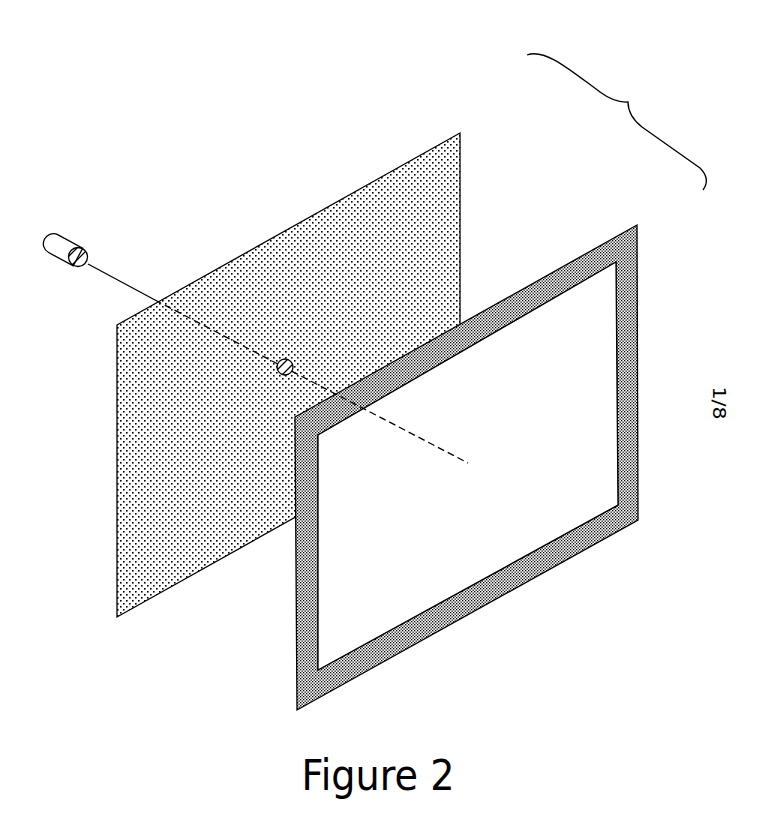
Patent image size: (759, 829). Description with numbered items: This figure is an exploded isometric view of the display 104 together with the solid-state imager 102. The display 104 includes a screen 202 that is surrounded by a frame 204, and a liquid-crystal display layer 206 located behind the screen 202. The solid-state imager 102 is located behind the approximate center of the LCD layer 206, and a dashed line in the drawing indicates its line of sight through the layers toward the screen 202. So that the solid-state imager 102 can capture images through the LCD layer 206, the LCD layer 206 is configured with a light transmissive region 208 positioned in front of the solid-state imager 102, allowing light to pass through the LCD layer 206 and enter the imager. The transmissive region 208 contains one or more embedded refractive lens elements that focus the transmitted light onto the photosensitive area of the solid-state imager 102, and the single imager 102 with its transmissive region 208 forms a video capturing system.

The solid-state imager 102 is at (72, 246).
The display 104 is at (628, 102).
The screen 202 is at (465, 570).
The frame 204 is at (637, 310).
The liquid-crystal display layer 206 is at (452, 185).
The light transmissive region 208 is at (291, 356).